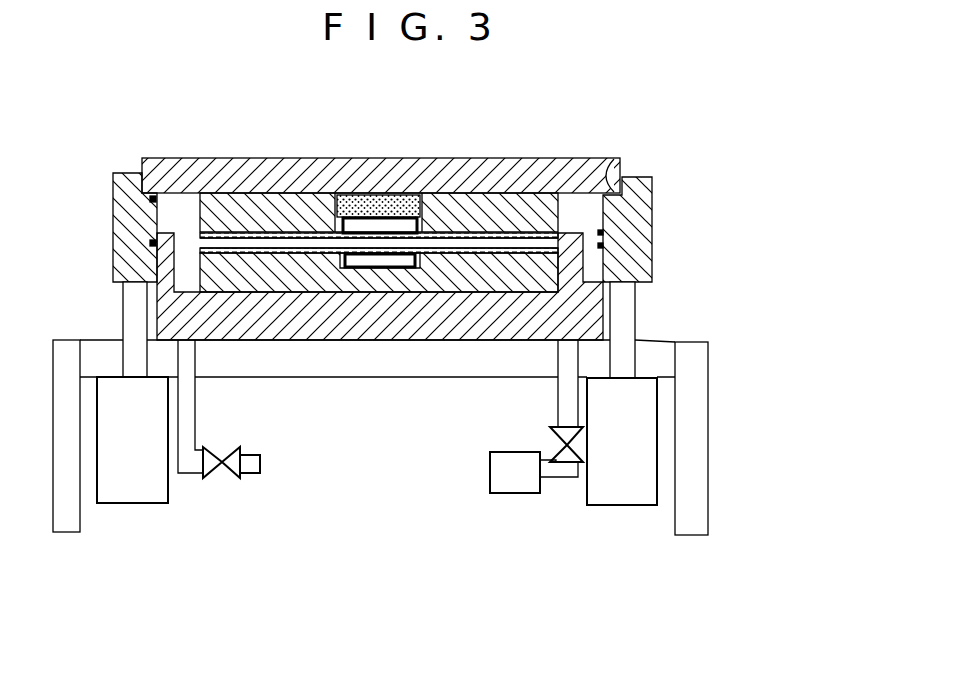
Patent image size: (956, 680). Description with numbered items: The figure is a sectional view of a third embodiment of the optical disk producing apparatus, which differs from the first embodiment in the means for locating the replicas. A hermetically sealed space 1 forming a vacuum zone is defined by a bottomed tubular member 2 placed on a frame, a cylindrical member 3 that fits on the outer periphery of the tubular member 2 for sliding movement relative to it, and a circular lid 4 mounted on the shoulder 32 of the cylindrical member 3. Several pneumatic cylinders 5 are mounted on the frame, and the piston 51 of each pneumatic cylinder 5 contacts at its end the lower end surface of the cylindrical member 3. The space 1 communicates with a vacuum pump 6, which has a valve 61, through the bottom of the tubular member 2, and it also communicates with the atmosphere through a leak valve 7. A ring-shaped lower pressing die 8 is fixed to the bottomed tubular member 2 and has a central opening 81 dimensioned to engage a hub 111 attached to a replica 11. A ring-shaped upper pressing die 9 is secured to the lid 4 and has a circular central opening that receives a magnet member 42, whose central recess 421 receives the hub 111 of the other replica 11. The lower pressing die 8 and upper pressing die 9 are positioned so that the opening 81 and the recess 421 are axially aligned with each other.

The hermetically sealed space 1 is at (369, 223).
The replica 11 is at (257, 247).
The hub 111 is at (428, 222).
The bottomed tubular member 2 is at (278, 322).
The cylindrical member 3 is at (655, 200).
The shoulder 32 is at (610, 165).
The lid 4 is at (438, 160).
The magnet member 42 is at (395, 195).
The central recess 421 is at (350, 196).
The pneumatic cylinder 5 is at (130, 504).
The piston 51 is at (123, 310).
The vacuum pump 6 is at (520, 494).
The valve 61 is at (553, 435).
The leak valve 7 is at (230, 479).
The lower pressing die 8 is at (440, 272).
The central opening 81 is at (352, 270).
The upper pressing die 9 is at (517, 200).